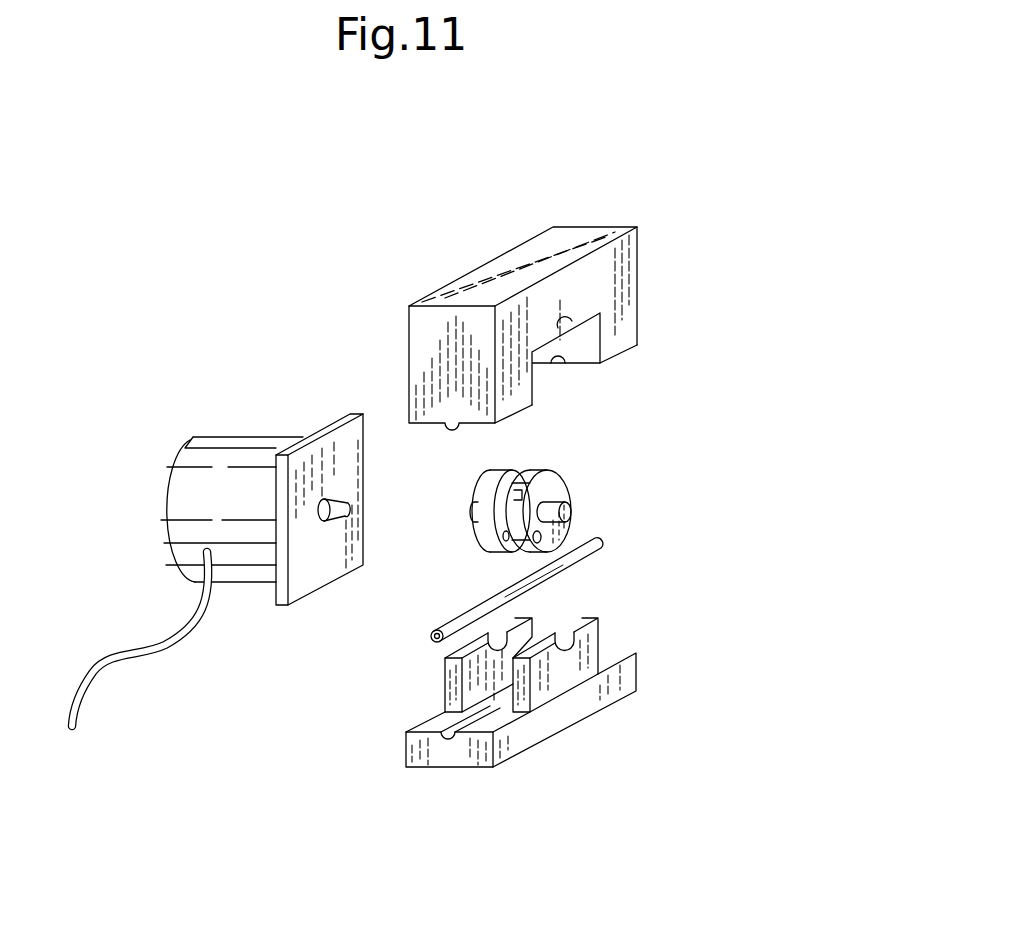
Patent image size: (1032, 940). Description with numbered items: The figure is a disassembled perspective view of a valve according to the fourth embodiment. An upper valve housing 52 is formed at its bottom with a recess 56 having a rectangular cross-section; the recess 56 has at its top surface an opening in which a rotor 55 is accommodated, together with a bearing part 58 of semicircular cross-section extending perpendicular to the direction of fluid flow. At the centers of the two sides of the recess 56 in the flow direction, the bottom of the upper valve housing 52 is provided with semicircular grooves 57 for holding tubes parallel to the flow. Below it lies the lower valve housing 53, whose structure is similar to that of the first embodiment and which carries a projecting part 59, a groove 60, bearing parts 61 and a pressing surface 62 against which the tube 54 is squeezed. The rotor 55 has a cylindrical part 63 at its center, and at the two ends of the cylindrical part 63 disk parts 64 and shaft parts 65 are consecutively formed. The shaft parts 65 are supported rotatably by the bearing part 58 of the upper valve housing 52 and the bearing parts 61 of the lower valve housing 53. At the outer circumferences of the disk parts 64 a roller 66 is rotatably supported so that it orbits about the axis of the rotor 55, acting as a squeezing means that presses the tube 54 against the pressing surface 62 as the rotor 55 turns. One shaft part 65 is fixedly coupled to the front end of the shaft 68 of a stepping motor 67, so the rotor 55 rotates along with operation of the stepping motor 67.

The upper valve housing 52 is at (654, 258).
The lower valve housing 53 is at (608, 755).
The tube 54 is at (600, 557).
The rotor 55 is at (568, 512).
The recess 56 is at (567, 352).
The groove 57 is at (563, 364).
The bearing part 58 is at (574, 321).
The projecting part 59 is at (584, 646).
The groove 60 is at (451, 737).
The bearing part 61 is at (556, 649).
The pressing surface 62 is at (497, 712).
The cylindrical part 63 is at (507, 482).
The disk part 64 is at (553, 482).
The shaft part 65 is at (472, 512).
The roller 66 is at (500, 552).
The stepping motor 67 is at (195, 473).
The shaft 68 is at (337, 520).